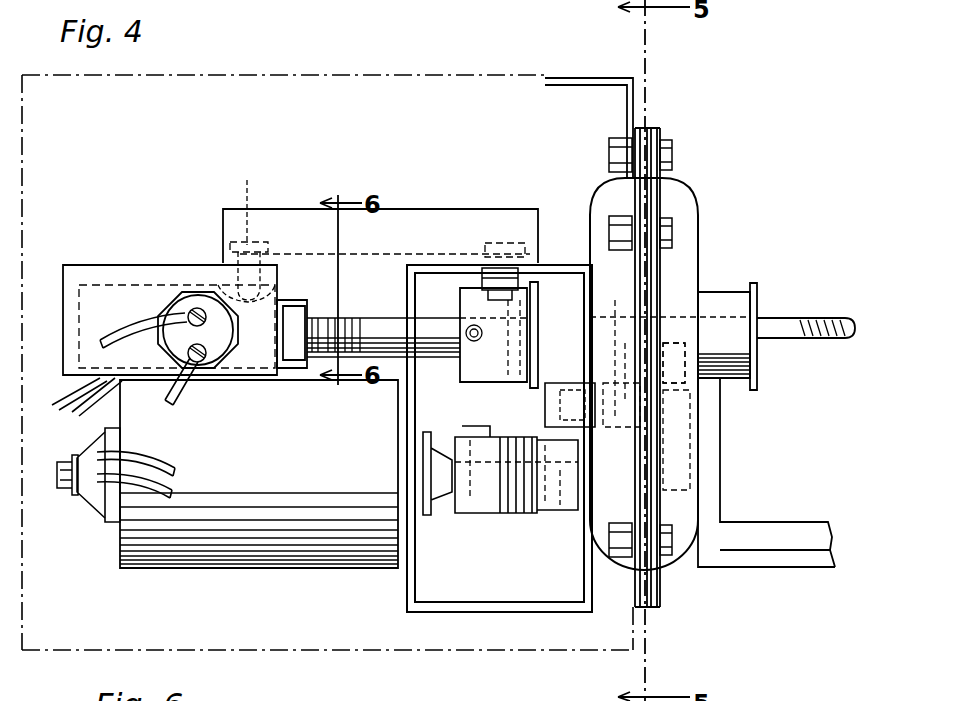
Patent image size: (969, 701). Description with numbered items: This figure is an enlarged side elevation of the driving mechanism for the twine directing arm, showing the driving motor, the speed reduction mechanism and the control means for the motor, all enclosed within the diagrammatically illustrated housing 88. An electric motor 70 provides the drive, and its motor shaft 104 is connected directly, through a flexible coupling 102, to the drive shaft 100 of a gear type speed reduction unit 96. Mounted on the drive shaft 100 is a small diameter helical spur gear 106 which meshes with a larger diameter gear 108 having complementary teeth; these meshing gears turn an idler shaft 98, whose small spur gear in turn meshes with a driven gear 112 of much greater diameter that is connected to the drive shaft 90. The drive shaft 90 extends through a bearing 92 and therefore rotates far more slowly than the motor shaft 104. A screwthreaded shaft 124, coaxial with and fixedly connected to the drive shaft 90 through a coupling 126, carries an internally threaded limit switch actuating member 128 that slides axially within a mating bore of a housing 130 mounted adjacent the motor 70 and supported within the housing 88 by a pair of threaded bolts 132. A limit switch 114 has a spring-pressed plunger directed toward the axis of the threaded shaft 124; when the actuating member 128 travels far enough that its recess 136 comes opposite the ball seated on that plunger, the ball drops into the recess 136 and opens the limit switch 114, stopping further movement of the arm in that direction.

The electric motor 70 is at (227, 474).
The housing 88 is at (330, 652).
The drive shaft 90 is at (785, 318).
The bearing 92 is at (715, 292).
The gear type speed reduction unit 96 is at (698, 200).
The idler shaft 98 is at (690, 415).
The drive shaft 100 is at (585, 522).
The flexible coupling 102 is at (526, 505).
The motor shaft 104 is at (468, 480).
The helical spur gear 106 is at (680, 500).
The gear 108 is at (690, 390).
The driven gear 112 is at (615, 300).
The limit switch 114 is at (178, 300).
The screwthreaded shaft 124 is at (390, 318).
The coupling 126 is at (462, 310).
The limit switch actuating member 128 is at (280, 300).
The housing 130 is at (87, 265).
The threaded bolts 132 is at (247, 180).
The recess 136 is at (315, 322).